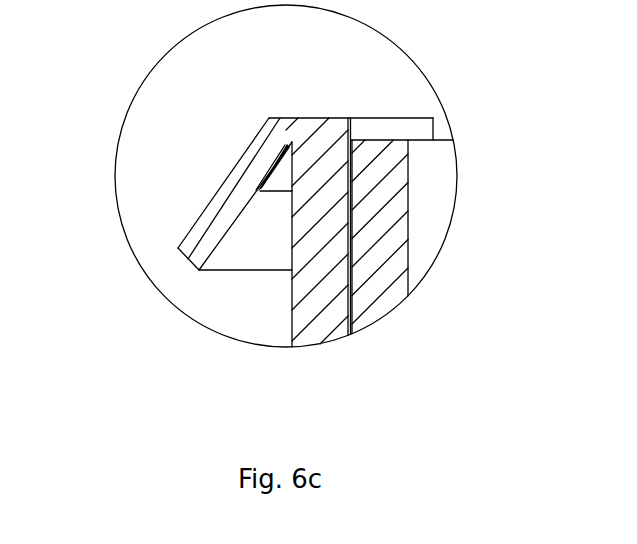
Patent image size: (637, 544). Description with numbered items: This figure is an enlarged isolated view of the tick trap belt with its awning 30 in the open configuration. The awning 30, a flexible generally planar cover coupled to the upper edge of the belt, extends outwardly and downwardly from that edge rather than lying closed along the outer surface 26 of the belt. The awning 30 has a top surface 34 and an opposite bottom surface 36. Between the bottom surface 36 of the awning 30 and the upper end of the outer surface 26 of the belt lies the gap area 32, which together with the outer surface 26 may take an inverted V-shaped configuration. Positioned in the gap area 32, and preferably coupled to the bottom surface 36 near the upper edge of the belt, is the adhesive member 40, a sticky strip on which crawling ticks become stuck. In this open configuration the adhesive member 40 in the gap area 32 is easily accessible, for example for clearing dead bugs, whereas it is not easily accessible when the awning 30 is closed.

The outer surface 26 is at (365, 265).
The awning 30 is at (165, 194).
The gap area 32 is at (257, 253).
The top surface 34 is at (179, 232).
The bottom surface 36 is at (232, 253).
The adhesive member 40 is at (279, 161).